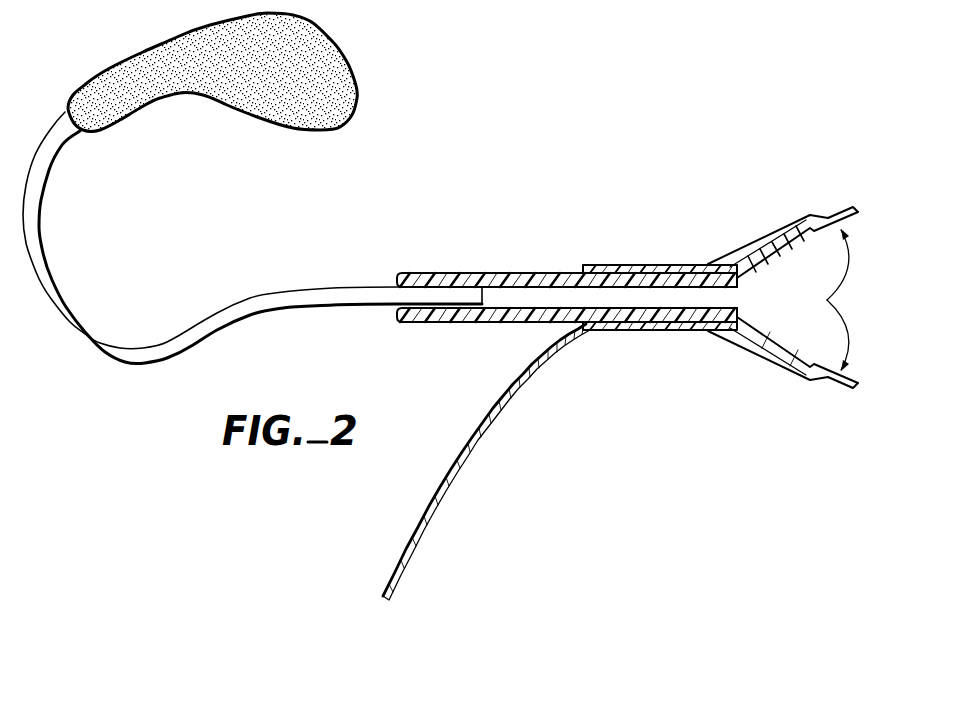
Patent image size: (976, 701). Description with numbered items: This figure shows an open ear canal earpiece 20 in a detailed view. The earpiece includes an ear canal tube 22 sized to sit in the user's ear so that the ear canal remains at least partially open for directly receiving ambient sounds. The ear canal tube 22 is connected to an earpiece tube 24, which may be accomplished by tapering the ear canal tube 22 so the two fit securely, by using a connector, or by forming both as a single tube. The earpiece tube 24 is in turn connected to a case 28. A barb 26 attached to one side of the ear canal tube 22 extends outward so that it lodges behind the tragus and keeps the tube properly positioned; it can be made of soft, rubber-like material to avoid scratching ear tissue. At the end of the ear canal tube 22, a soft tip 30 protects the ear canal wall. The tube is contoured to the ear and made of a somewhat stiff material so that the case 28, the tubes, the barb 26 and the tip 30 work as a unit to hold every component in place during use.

The open ear canal earpiece 20 is at (530, 140).
The ear canal tube 22 is at (513, 260).
The earpiece tube 24 is at (90, 327).
The barb 26 is at (483, 456).
The case 28 is at (340, 128).
The tip 30 is at (827, 300).